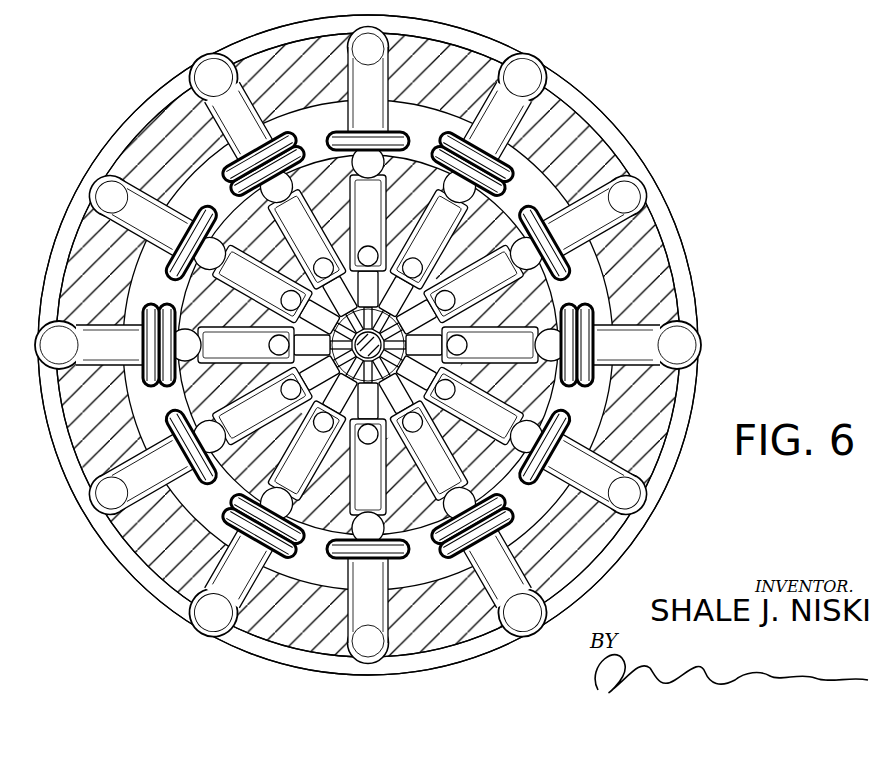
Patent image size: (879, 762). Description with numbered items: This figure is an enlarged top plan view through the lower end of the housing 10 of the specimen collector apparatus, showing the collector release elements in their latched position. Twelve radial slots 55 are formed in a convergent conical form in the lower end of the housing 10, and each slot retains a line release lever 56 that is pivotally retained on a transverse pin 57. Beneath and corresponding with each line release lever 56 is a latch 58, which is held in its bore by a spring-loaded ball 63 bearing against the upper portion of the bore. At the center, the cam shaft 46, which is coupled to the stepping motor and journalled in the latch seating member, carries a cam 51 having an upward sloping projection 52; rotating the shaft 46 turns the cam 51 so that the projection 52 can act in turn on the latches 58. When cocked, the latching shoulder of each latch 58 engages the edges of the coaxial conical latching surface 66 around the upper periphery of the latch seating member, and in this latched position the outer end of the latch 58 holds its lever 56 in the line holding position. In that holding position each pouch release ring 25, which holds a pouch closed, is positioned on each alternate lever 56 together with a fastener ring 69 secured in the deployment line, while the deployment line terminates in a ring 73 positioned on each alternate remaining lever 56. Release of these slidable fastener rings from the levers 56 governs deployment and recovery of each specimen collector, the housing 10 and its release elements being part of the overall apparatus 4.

The pump 4 is at (388, 0).
The housing 10 is at (585, 128).
The pouch release ring 25 is at (585, 306).
The cam shaft 46 is at (383, 240).
The cam 51 is at (262, 380).
The upward sloping projection 52 is at (470, 327).
The radial slots 55 is at (192, 70).
The line release lever 56 is at (609, 361).
The transverse pins 57 is at (393, 96).
The latch 58 is at (359, 214).
The ball 63 is at (369, 248).
The conical latching surface 66 is at (265, 343).
The fastener ring 69 is at (582, 388).
The ring 73 is at (530, 212).